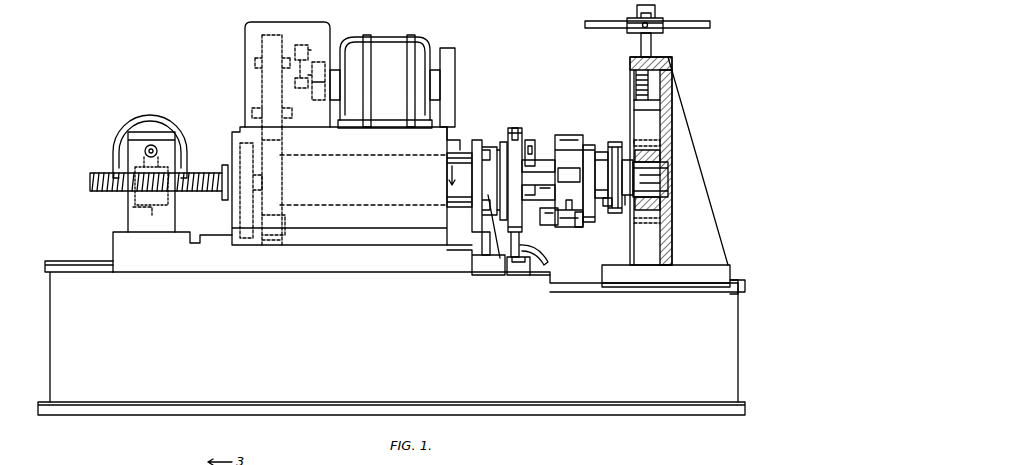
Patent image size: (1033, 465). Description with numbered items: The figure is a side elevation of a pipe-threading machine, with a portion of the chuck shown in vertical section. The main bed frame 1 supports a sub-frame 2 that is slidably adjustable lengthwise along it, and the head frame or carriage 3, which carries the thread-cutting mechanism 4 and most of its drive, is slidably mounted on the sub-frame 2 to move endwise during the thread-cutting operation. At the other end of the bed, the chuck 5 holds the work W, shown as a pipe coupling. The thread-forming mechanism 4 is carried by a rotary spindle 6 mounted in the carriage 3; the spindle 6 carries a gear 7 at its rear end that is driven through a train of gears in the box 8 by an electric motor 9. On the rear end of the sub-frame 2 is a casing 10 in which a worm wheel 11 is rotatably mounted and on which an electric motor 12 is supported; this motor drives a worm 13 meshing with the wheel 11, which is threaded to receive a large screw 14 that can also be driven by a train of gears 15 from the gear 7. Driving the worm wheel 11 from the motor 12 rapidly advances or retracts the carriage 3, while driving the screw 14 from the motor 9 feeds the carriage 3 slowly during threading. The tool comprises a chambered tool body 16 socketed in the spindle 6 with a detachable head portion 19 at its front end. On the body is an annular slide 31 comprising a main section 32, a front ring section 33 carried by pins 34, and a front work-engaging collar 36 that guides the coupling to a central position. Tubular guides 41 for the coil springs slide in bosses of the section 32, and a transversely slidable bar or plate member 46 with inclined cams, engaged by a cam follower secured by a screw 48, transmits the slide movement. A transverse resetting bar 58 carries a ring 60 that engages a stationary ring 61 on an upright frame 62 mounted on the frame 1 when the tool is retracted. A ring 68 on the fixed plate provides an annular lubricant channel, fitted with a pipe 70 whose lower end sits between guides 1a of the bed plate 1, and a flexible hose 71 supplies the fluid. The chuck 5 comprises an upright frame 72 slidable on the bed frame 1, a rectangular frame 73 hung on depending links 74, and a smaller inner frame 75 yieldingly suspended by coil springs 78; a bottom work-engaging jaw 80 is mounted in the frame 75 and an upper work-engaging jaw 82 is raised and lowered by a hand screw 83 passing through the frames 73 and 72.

The main bed frame 1 is at (55, 328).
The guides 1a is at (531, 278).
The sub-frame 2 is at (120, 242).
The head frame or carriage 3 is at (236, 134).
The thread-cutting mechanism 4 is at (560, 135).
The chuck 5 is at (690, 128).
The rotary spindle 6 is at (447, 178).
The gear 7 is at (272, 145).
The box 8 is at (250, 55).
The electric motor 9 is at (388, 50).
The casing 10 is at (138, 146).
The worm wheel 11 is at (133, 207).
The electric motor 12 is at (165, 122).
The worm 13 is at (148, 145).
The screw 14 is at (200, 172).
The train of gears 15 is at (244, 212).
The tool body 16 is at (542, 160).
The head portion 19 is at (614, 142).
The annular slide 31 is at (585, 145).
The main slide section 32 is at (580, 227).
The front ring section 33 is at (618, 213).
The pins 34 is at (600, 152).
The work-engaging collar 36 is at (655, 212).
The tubular guides 41 is at (530, 140).
The bar or plate member 46 is at (550, 218).
The screw 48 is at (608, 220).
The transverse bar 58 is at (516, 130).
The ring 60 is at (503, 148).
The ring 61 is at (478, 150).
The upright frame 62 is at (483, 275).
The ring 68 is at (513, 130).
The pipe 70 is at (515, 275).
The hose 71 is at (548, 262).
The upright frame 72 is at (678, 100).
The rectangular frame 73 is at (668, 110).
The depending links 74 is at (638, 88).
The inner rectangular frame 75 is at (660, 145).
The coil springs 78 is at (668, 64).
The bottom work-engaging jaw 80 is at (660, 203).
The upper work-engaging jaw 82 is at (668, 156).
The hand screw 83 is at (655, 47).
The work W is at (665, 173).